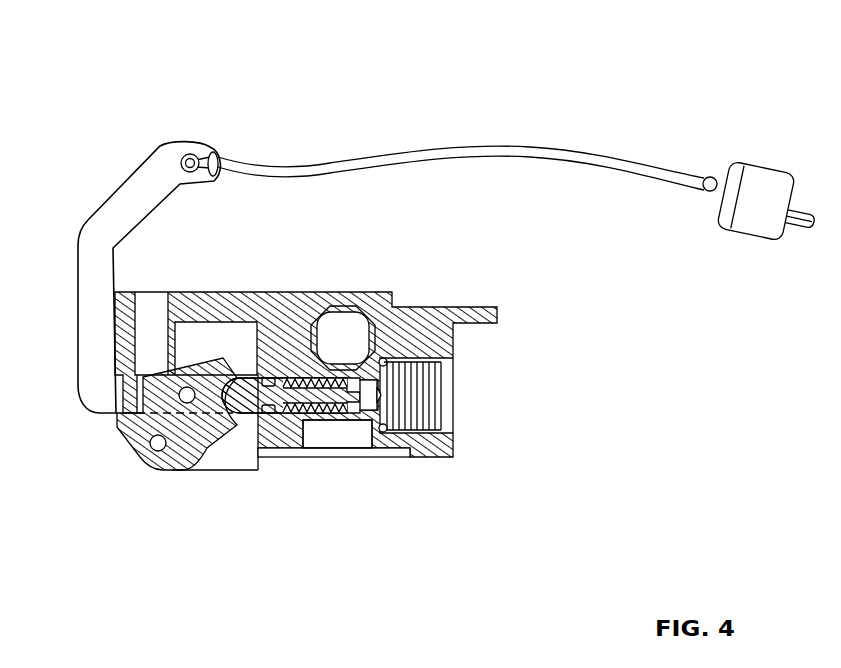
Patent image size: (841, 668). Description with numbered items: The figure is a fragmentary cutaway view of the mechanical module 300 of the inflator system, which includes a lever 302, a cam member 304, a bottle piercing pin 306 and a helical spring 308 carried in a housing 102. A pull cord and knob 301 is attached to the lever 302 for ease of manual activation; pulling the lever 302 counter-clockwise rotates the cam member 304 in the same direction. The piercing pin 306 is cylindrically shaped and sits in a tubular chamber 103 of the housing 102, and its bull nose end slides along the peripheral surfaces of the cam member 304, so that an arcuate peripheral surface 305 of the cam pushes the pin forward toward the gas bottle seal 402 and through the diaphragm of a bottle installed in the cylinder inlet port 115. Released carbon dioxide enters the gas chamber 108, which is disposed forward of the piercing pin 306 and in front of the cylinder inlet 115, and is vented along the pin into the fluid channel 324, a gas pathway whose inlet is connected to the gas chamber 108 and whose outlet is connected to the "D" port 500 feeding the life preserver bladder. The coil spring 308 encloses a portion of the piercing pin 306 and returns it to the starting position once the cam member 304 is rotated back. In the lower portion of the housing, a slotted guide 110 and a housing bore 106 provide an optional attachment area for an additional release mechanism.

The mechanical module 300 is at (128, 42).
The lever 302 is at (131, 158).
The pull cord and knob 301 is at (787, 150).
The housing 102 is at (178, 283).
The tubular chamber 103 is at (293, 377).
The "D" port 500 is at (342, 305).
The fluid channel 324 is at (385, 358).
The gas chamber 108 is at (378, 388).
The cylinder inlet port 115 is at (447, 376).
The gas bottle seal 402 is at (453, 422).
The cam member 304 is at (125, 430).
The arcuate peripheral surface 305 is at (172, 466).
The bottle piercing pin 306 is at (252, 418).
The helical spring 308 is at (317, 413).
The slotted guide 110 is at (277, 453).
The housing bore 106 is at (342, 418).